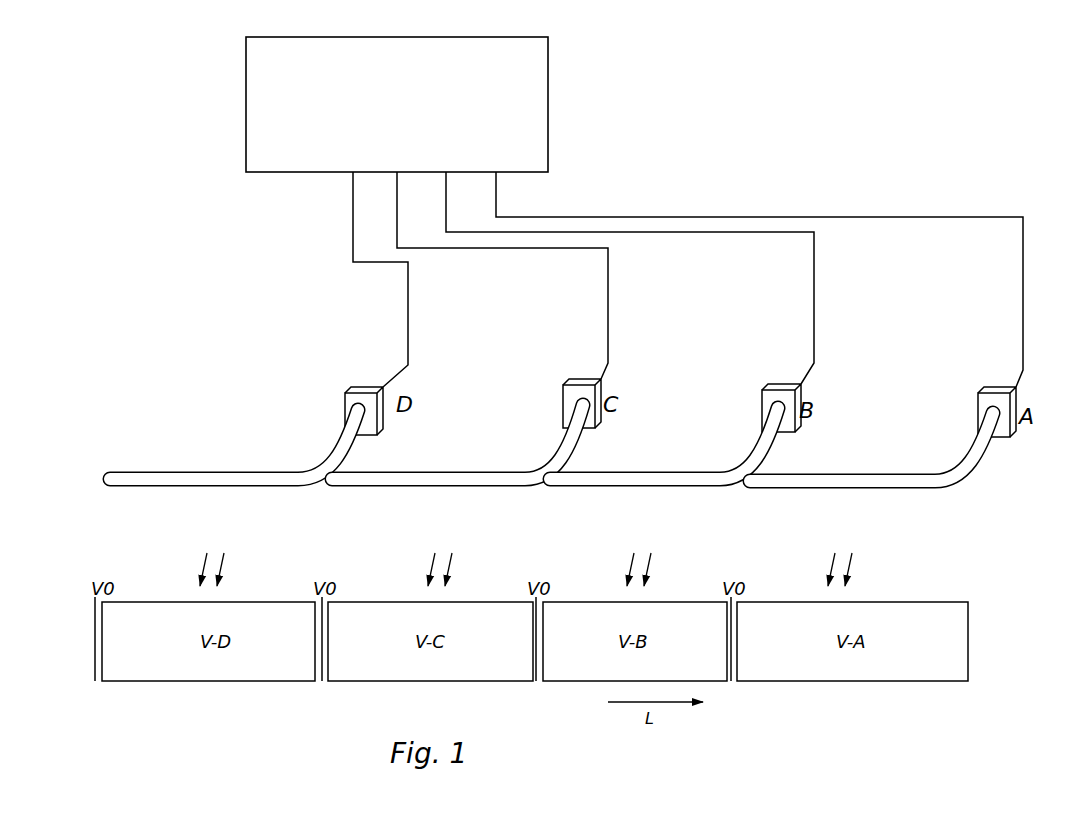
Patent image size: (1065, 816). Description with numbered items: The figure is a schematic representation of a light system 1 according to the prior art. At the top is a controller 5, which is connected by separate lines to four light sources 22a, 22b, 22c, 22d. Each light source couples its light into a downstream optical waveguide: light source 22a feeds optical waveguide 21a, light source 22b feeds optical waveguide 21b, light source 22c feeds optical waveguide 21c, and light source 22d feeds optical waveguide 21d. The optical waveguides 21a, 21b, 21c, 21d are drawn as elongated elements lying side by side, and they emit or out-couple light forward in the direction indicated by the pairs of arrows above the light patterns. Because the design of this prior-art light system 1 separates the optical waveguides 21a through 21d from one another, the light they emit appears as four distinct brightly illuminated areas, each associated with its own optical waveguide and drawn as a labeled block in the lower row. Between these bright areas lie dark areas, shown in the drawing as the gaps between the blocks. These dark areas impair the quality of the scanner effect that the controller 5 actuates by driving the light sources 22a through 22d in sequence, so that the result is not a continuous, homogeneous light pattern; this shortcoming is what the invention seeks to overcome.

The light system 1 is at (216, 312).
The controller 5 is at (397, 104).
The optical waveguide 21a is at (861, 459).
The optical waveguide 21b is at (660, 462).
The optical waveguide 21c is at (459, 459).
The optical waveguide 21d is at (243, 462).
The light source 22a is at (987, 406).
The light source 22b is at (780, 404).
The light source 22c is at (582, 402).
The light source 22d is at (356, 402).